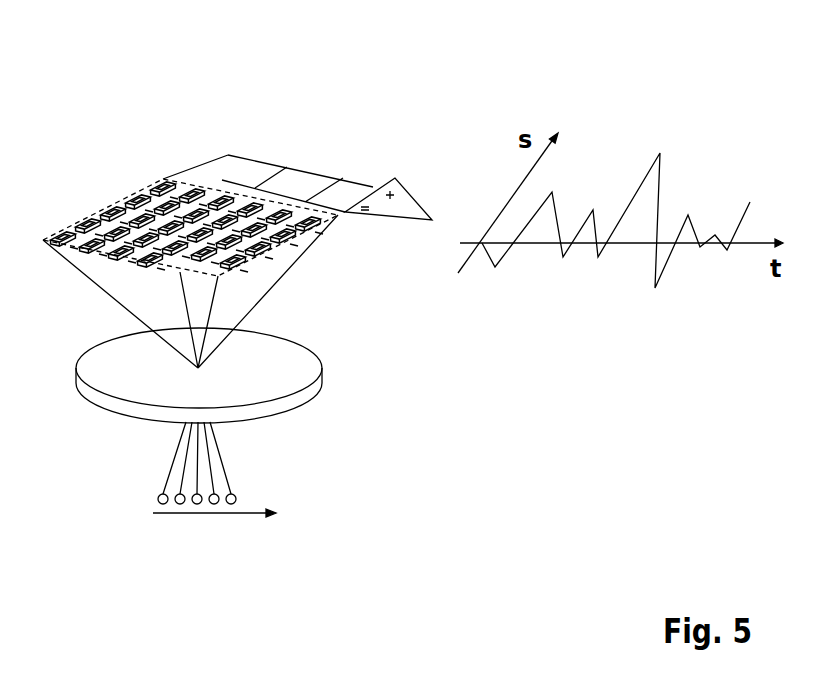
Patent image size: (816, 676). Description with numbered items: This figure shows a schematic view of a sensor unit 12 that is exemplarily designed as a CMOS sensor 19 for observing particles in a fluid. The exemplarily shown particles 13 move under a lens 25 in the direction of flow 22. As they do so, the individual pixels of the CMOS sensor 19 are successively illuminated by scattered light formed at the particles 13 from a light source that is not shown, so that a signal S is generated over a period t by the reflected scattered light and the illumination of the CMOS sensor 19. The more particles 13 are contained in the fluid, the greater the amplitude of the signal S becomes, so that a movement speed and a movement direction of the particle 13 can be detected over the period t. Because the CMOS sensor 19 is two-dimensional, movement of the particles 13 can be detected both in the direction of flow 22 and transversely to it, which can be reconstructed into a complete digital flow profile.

The sensor unit 12 is at (167, 125).
The CMOS sensor 19 is at (128, 193).
The lens 25 is at (312, 390).
The particle 13 is at (163, 515).
The direction of flow 22 is at (243, 515).